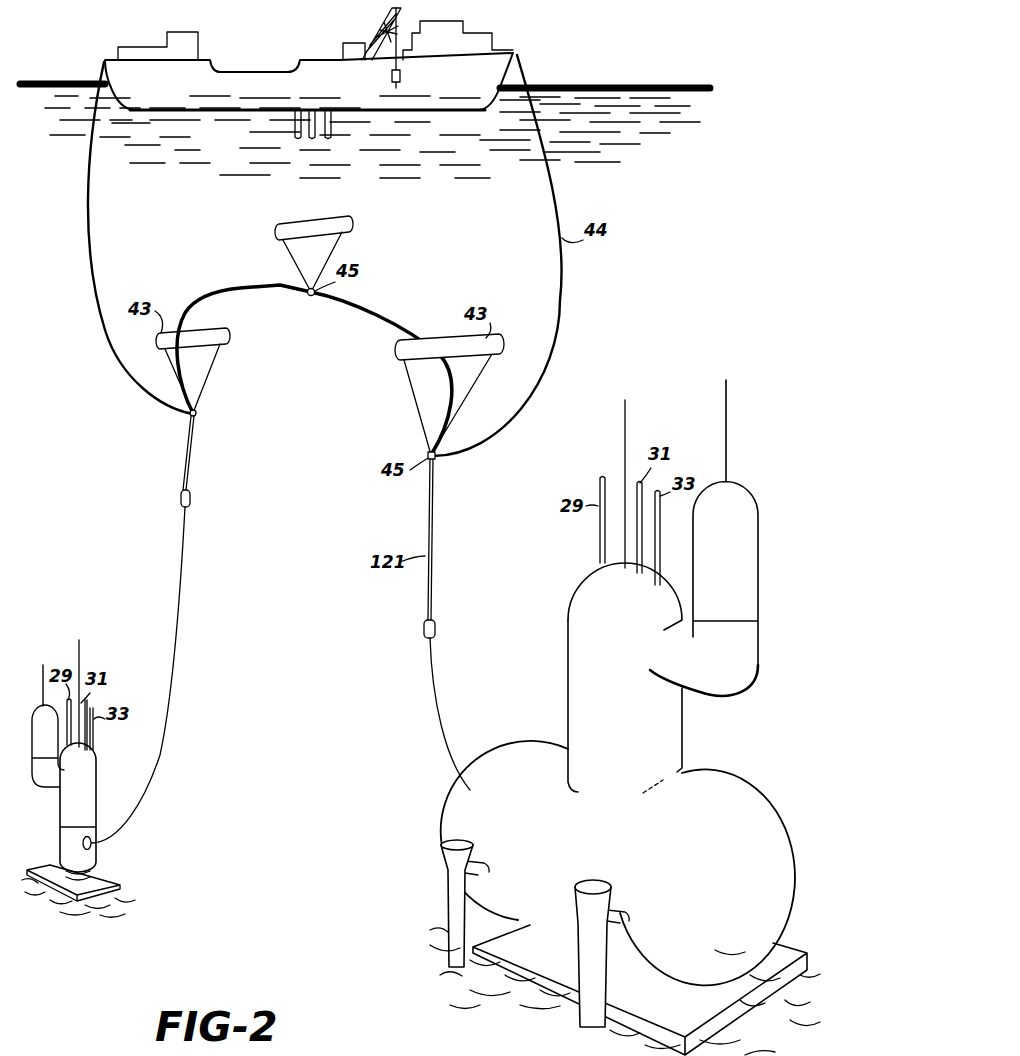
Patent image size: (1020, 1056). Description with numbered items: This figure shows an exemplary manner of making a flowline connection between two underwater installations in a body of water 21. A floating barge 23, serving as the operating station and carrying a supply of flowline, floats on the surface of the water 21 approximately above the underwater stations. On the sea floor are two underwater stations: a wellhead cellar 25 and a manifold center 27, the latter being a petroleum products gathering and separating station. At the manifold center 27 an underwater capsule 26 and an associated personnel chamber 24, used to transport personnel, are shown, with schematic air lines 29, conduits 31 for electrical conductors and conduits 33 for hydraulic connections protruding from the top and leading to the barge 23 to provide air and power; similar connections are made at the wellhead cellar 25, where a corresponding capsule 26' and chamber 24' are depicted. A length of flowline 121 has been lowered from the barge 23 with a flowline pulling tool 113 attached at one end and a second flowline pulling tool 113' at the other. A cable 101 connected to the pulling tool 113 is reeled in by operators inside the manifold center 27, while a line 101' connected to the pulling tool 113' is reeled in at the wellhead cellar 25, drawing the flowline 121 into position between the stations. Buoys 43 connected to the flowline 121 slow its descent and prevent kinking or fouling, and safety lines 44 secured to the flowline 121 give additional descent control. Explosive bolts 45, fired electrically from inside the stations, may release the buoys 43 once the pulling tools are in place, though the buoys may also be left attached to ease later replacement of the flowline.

The body of water 21 is at (606, 88).
The floating barge 23 is at (276, 74).
The personnel chamber 24 is at (722, 538).
The buoyancy tank 24' is at (34, 726).
The underwater station (wellhead cellar) 25 is at (60, 846).
The underwater capsule 26 is at (625, 596).
The underwater wellhead 26' is at (76, 830).
The manifold center 27 is at (582, 862).
The air lines 29 is at (295, 137).
The conduits for electrical conductors 31 is at (313, 140).
The conduits for hydraulic connections 33 is at (330, 137).
The buoys 43 is at (281, 236).
The safety lines 44 is at (103, 320).
The explosive bolts 45 is at (190, 415).
The cable 101 is at (424, 714).
The line 101' is at (138, 675).
The flowline pulling tool 113 is at (400, 634).
The flowline pulling tool 113' is at (209, 500).
The flowline 121 is at (228, 291).